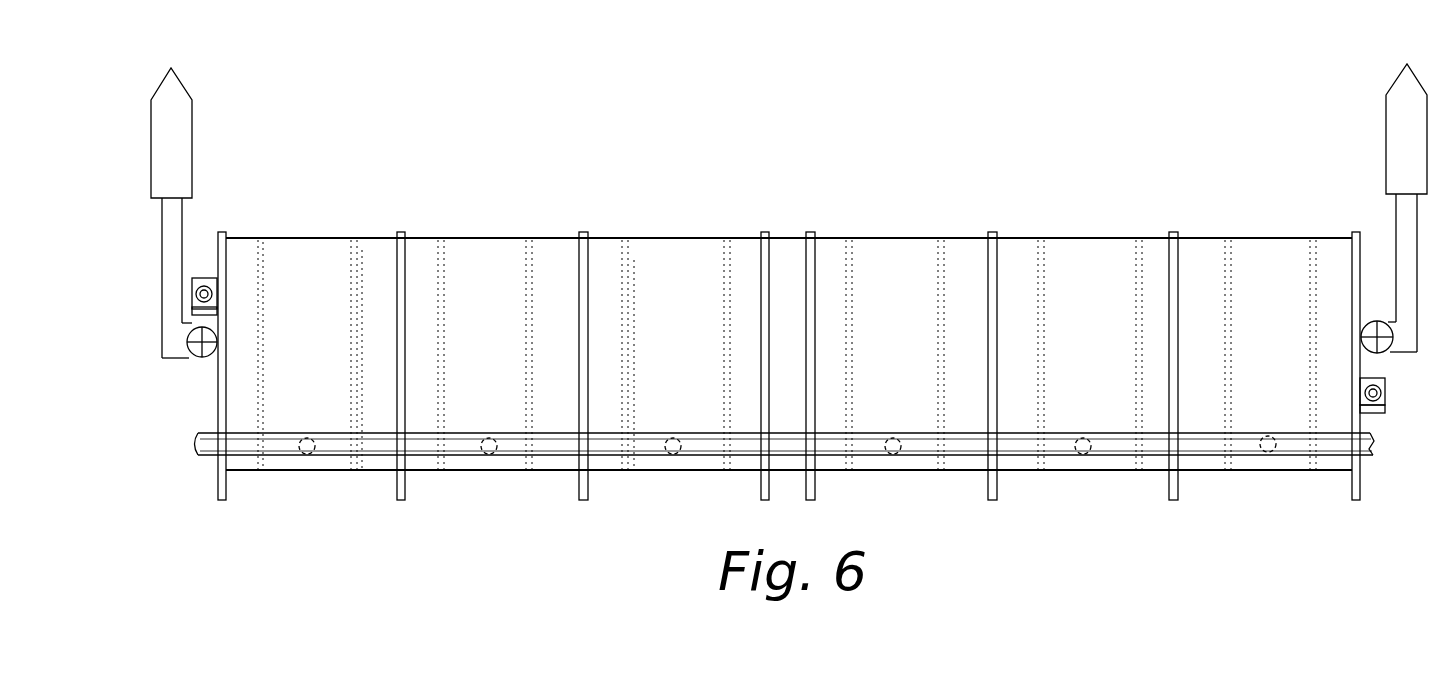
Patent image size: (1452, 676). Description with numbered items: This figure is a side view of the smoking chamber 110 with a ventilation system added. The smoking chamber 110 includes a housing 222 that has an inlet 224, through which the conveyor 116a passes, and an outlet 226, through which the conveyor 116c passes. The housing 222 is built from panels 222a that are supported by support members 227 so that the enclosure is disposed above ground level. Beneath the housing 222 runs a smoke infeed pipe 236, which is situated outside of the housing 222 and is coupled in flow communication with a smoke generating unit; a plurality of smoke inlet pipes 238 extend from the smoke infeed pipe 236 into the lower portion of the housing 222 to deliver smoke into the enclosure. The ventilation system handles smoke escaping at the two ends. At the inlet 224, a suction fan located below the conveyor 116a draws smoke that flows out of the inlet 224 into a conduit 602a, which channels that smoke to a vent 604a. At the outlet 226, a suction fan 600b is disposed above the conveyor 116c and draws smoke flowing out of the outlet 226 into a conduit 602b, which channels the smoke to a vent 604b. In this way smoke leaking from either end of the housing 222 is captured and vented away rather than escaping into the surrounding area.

The smoking chamber 110 is at (993, 167).
The housing 222 is at (837, 202).
The panels 222a is at (493, 243).
The inlet 224 is at (214, 256).
The outlet 226 is at (1360, 420).
The support members 227 is at (405, 322).
The smoke infeed pipe 236 is at (507, 462).
The smoke inlet pipes 238 is at (307, 460).
The conveyor 116a is at (204, 277).
The conveyor 116c is at (1358, 455).
The suction fan 600b is at (1367, 353).
The conduit 602a is at (167, 275).
The conduit 602b is at (1397, 215).
The vent 604a is at (192, 112).
The vent 604b is at (1388, 128).